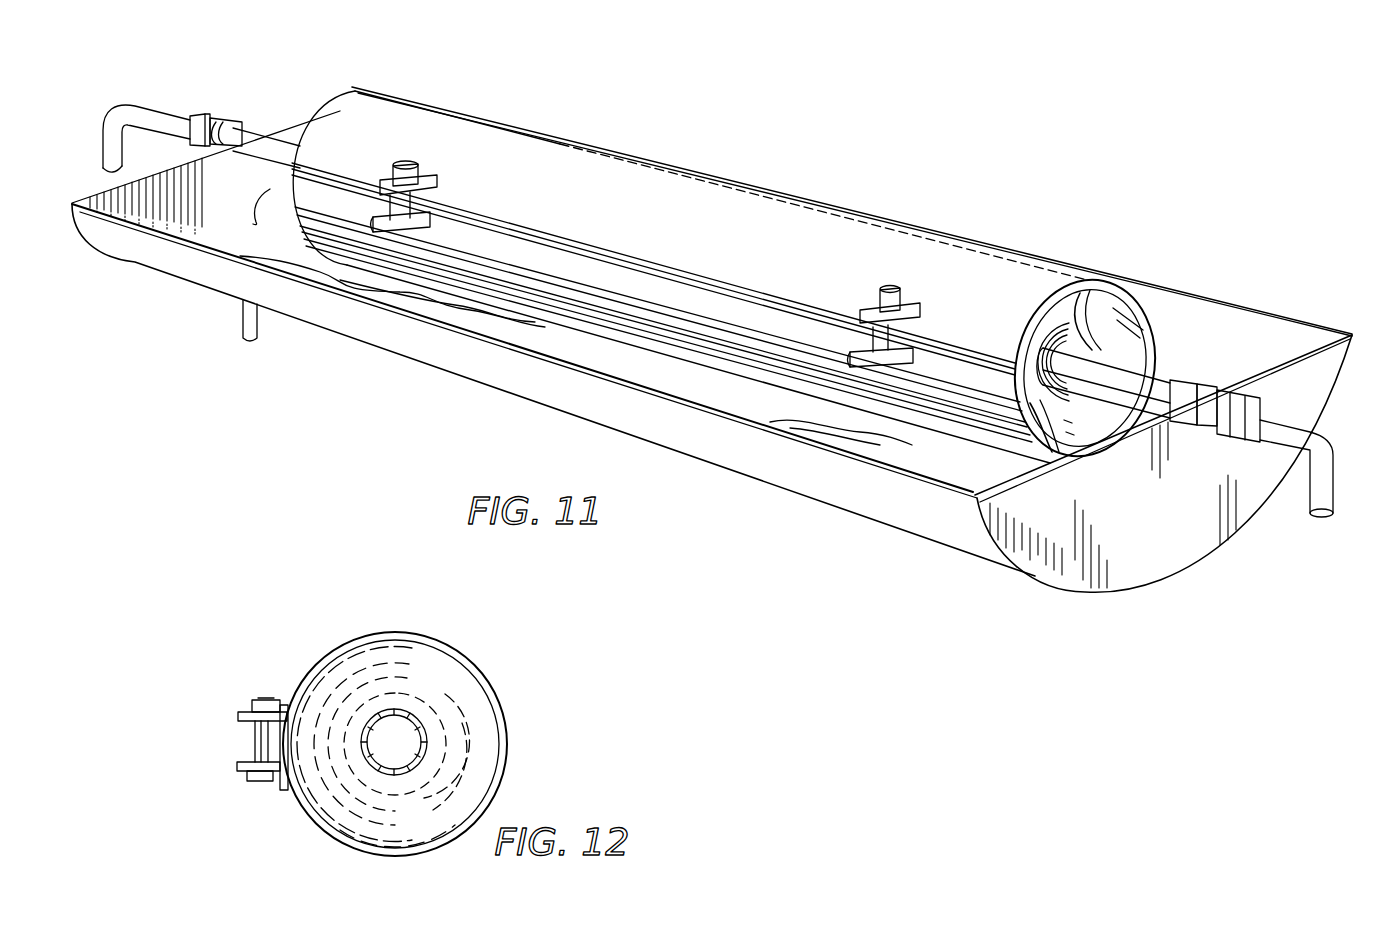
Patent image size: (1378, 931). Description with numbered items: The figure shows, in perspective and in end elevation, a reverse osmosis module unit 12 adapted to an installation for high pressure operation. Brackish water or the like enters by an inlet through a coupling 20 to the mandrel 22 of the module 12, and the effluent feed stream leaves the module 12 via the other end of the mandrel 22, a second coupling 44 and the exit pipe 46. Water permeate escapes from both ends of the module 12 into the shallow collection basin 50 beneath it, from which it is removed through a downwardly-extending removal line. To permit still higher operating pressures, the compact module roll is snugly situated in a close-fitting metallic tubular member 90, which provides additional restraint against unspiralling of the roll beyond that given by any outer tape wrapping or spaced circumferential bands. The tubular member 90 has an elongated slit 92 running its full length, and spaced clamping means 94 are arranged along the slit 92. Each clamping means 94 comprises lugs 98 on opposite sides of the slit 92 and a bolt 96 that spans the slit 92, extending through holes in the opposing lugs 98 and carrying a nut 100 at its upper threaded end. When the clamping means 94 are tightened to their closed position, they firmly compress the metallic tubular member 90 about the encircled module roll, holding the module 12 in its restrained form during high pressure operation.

In FIG. 11, the module unit 12 is at (860, 227).
In FIG. 12, the module unit 12 is at (462, 646).
In FIG. 11, the coupling 20 is at (1262, 396).
In FIG. 11, the mandrel 22 is at (265, 132).
In FIG. 12, the mandrel 22 is at (407, 710).
In FIG. 11, the coupling 44 is at (225, 122).
In FIG. 11, the exit pipe 46 is at (115, 112).
In FIG. 11, the shallow collection basin 50 is at (846, 514).
In FIG. 11, the tubular member 90 is at (1000, 270).
In FIG. 12, the tubular member 90 is at (497, 690).
In FIG. 11, the slit 92 is at (600, 262).
In FIG. 12, the slit 92 is at (280, 747).
In FIG. 11, the clamping means 94 is at (409, 184).
In FIG. 11, the bolt 96 is at (385, 205).
In FIG. 12, the bolt 96 is at (258, 776).
In FIG. 11, the lugs 98 is at (432, 190).
In FIG. 12, the lugs 98 is at (242, 712).
In FIG. 11, the nut 100 is at (397, 165).
In FIG. 12, the nut 100 is at (278, 708).